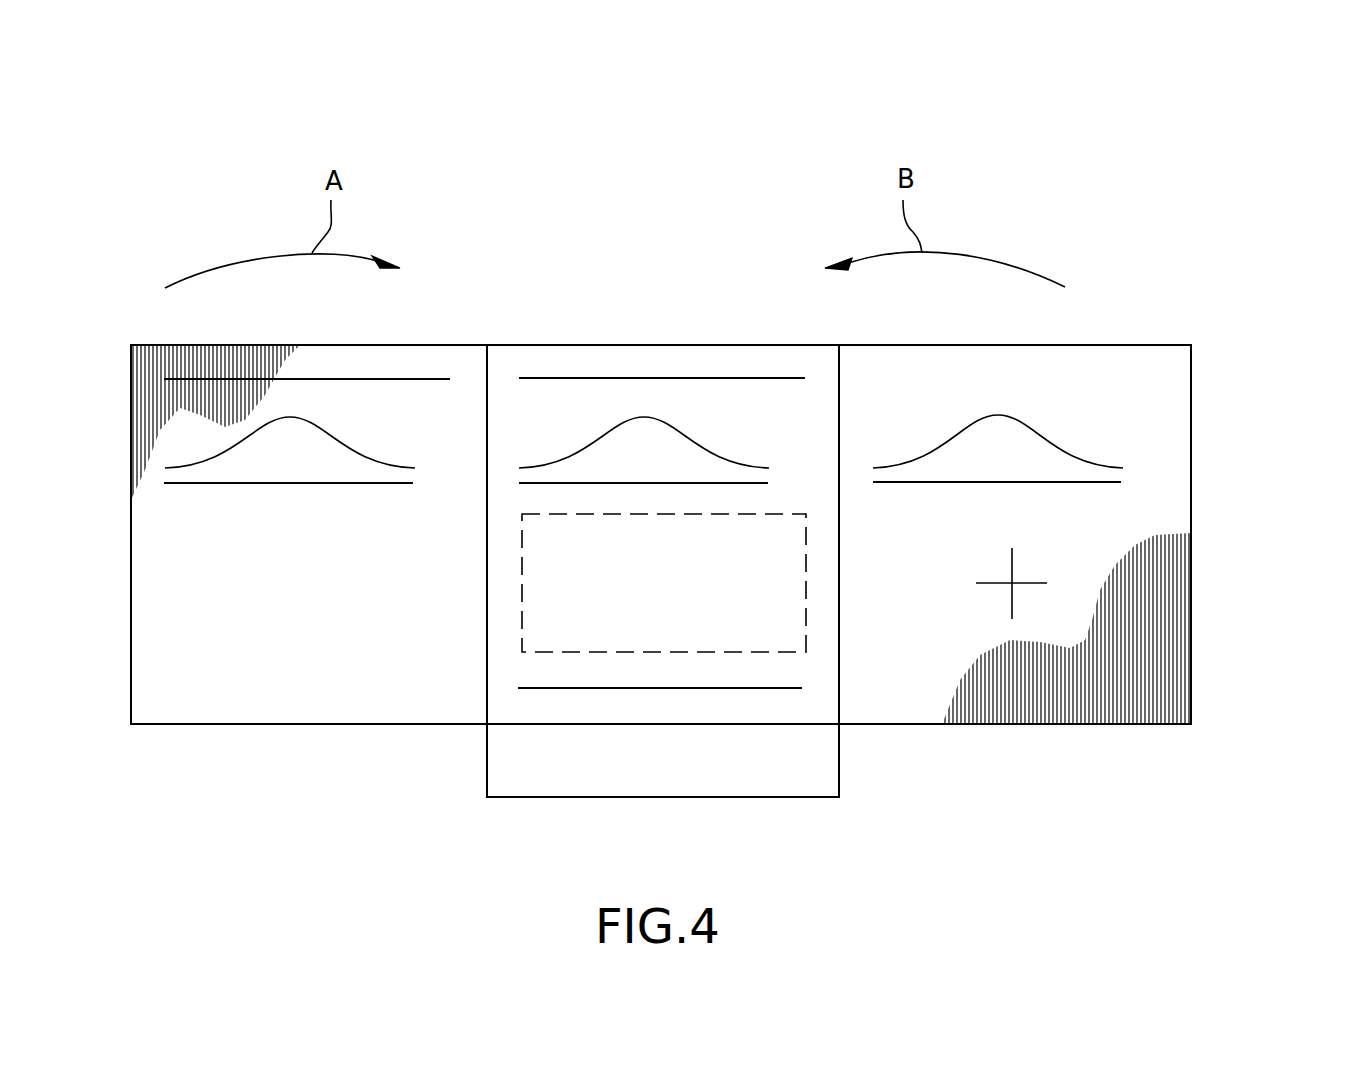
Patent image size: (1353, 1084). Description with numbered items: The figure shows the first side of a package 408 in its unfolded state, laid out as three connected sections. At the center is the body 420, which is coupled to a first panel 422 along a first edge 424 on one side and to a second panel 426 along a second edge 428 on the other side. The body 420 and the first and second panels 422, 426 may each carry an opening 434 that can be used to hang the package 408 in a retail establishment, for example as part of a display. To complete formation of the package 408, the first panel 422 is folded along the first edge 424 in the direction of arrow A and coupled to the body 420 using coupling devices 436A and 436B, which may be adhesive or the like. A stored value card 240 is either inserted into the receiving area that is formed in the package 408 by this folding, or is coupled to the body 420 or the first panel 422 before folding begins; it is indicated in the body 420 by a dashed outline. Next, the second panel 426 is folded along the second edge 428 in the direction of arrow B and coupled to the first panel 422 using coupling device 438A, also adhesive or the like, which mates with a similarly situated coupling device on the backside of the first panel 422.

The package 408 is at (1262, 132).
The body 420 is at (502, 358).
The first panel 422 is at (203, 709).
The first edge 424 is at (487, 553).
The second panel 426 is at (1127, 705).
The second edge 428 is at (839, 585).
The opening 434 is at (1050, 437).
The coupling device 436A is at (180, 380).
The coupling device 436B is at (663, 378).
The coupling device 438A is at (1040, 578).
The stored value card 240 is at (556, 637).